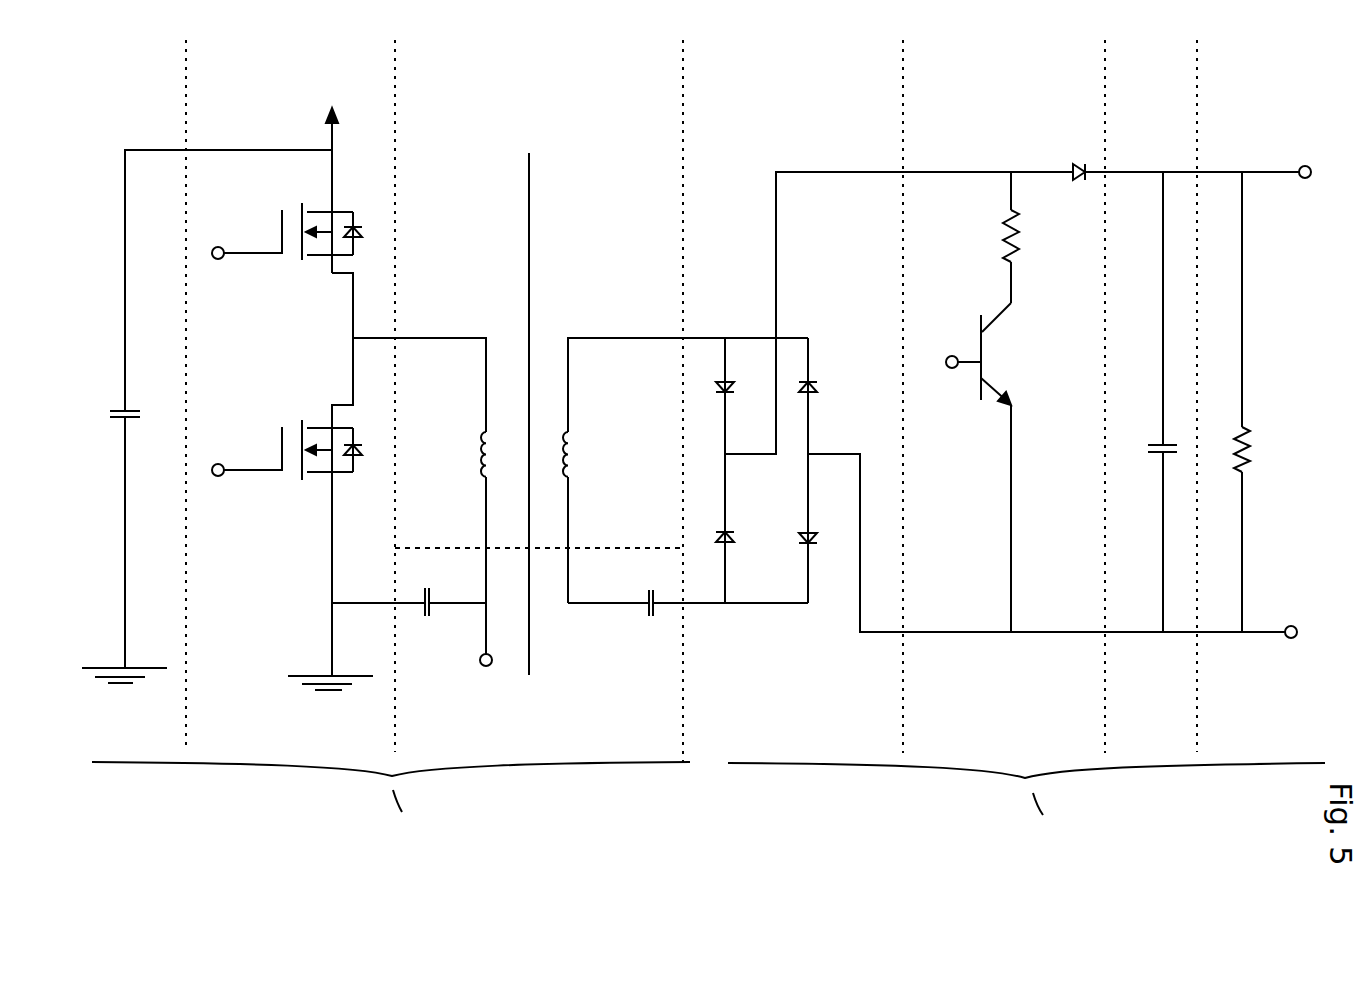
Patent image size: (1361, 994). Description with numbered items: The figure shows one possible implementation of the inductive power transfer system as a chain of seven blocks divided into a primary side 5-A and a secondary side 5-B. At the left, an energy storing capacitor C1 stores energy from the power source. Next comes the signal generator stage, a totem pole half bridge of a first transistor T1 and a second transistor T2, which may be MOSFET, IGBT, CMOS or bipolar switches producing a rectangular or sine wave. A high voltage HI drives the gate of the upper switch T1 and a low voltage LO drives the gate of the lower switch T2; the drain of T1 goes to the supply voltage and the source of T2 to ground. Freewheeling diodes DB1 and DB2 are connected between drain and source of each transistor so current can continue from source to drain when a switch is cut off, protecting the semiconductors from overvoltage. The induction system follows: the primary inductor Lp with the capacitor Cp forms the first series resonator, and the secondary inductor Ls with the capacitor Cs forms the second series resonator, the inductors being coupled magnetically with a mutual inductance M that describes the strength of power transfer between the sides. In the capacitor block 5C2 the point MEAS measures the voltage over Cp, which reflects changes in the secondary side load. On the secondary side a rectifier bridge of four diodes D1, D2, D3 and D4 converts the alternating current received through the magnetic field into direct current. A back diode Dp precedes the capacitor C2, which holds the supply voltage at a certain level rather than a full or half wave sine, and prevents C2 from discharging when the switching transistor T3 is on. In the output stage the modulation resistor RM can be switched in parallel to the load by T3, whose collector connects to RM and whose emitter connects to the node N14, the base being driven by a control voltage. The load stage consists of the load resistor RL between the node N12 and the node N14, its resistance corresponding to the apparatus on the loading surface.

The capacitor C1 is at (116, 519).
The first transistor T1 is at (301, 244).
The second transistor T2 is at (301, 507).
The diode DB1 is at (364, 217).
The diode DB2 is at (366, 468).
The high voltage HI is at (243, 234).
The low voltage LO is at (241, 451).
The inductor Lp is at (432, 470).
The inductor Ls is at (677, 470).
The capacitor Cp is at (409, 602).
The capacitor Cs is at (688, 589).
The measurement point MEAS is at (462, 653).
The mutual inductance M is at (530, 391).
The capacitor block 5C2 is at (584, 713).
The diode D1 is at (738, 396).
The diode D2 is at (738, 528).
The diode D3 is at (820, 396).
The diode D4 is at (822, 528).
The back diode Dp is at (1173, 157).
The modulation resistor RM is at (989, 237).
The switching transistor T3 is at (967, 467).
The capacitor C2 is at (1154, 402).
The load resistor RL is at (1265, 402).
The node N12 is at (1283, 154).
The node N14 is at (1270, 656).
The primary side 5-A is at (391, 808).
The secondary side 5-B is at (1026, 809).